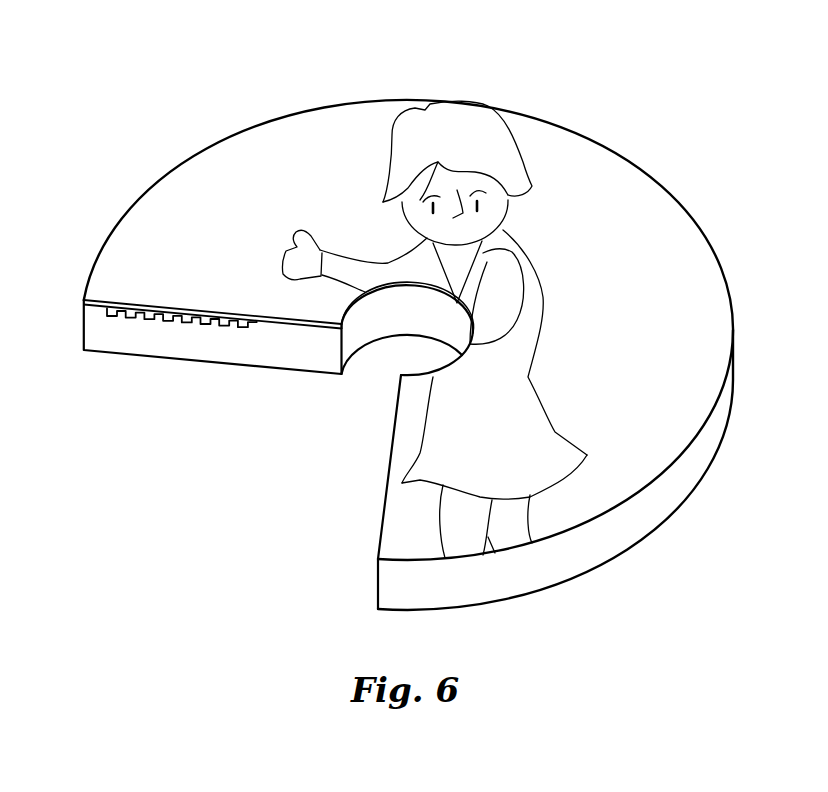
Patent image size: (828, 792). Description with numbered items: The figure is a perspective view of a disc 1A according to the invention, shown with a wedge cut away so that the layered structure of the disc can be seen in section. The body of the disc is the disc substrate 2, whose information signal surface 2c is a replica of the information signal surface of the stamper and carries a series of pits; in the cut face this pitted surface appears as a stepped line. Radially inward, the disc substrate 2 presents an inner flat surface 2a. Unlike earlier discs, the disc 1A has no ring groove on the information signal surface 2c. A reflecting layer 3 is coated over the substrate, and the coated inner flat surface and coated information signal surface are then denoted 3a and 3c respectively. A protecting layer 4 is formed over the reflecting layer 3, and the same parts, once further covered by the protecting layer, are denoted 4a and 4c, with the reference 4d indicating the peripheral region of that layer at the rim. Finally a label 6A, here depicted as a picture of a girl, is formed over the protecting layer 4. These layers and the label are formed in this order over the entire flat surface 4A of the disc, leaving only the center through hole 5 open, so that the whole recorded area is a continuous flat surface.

The disc 1A is at (279, 46).
The disc substrate 2 is at (177, 338).
The inner flat surface 2a is at (312, 328).
The information signal surface 2c is at (237, 323).
The reflecting layer 3 is at (113, 313).
The inner flat surface coated with reflecting layer 3a is at (332, 435).
The information signal surface coated with reflecting layer 3c is at (221, 416).
The protecting layer 4 is at (133, 305).
The inner flat surface coated with protecting layer 4a is at (328, 303).
The information signal surface coated with protecting layer 4c is at (253, 175).
The peripheral edge of cover layer 4d is at (167, 174).
The entire flat surface 4A is at (609, 258).
The center through hole 5 is at (398, 320).
The label 6A is at (472, 143).